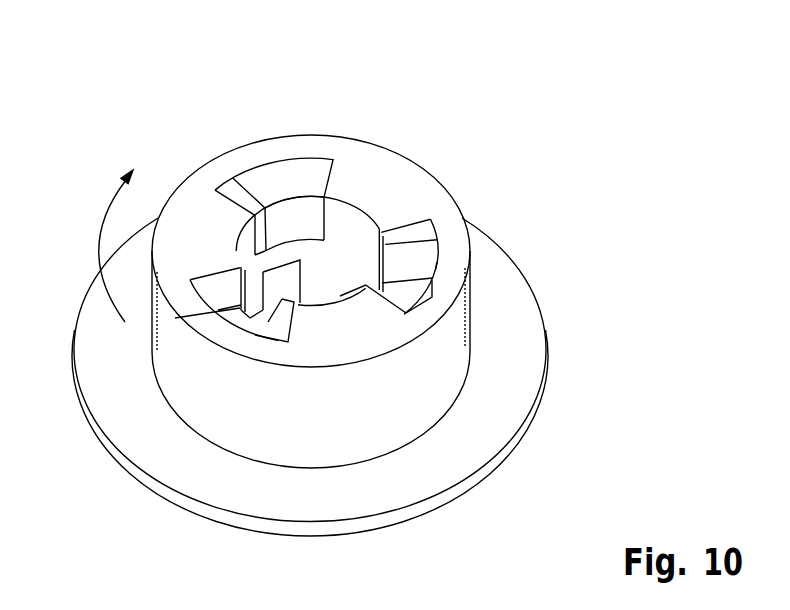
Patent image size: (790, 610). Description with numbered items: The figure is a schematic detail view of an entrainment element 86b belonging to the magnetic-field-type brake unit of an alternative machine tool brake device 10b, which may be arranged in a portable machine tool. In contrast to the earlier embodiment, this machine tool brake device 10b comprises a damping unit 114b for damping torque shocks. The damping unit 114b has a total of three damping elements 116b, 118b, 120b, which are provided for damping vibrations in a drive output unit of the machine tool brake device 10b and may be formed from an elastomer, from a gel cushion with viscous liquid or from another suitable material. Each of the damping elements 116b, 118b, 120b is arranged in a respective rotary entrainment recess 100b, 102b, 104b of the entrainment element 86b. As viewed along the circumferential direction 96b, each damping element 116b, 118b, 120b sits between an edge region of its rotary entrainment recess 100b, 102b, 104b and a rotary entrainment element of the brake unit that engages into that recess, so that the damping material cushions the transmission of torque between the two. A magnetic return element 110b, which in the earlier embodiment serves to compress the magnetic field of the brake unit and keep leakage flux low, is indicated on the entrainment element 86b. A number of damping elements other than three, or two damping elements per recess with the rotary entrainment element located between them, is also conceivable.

The machine tool brake device 10b is at (112, 112).
The entrainment element 86b is at (447, 330).
The circumferential direction 96b is at (102, 247).
The rotary entrainment recess 100b is at (240, 313).
The rotary entrainment recess 102b is at (402, 292).
The rotary entrainment recess 104b is at (293, 187).
The magnetic return element 110b is at (517, 397).
The damping unit 114b is at (450, 132).
The damping element 116b is at (282, 325).
The damping element 118b is at (232, 190).
The damping element 120b is at (405, 232).